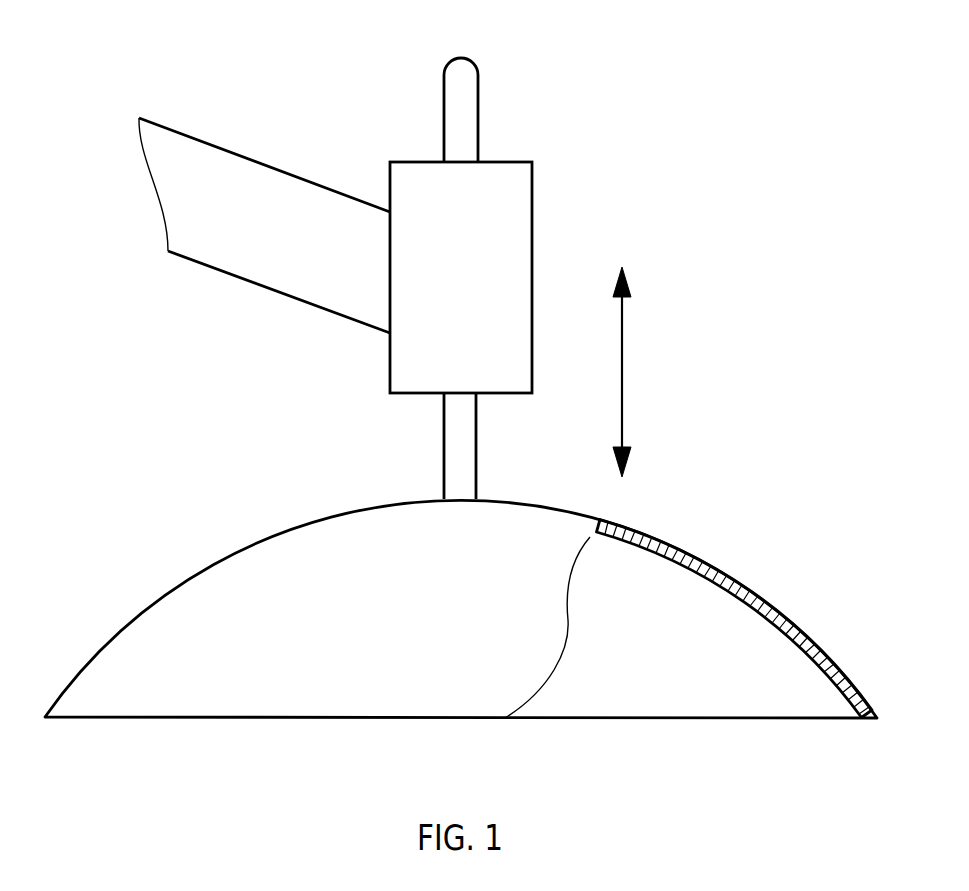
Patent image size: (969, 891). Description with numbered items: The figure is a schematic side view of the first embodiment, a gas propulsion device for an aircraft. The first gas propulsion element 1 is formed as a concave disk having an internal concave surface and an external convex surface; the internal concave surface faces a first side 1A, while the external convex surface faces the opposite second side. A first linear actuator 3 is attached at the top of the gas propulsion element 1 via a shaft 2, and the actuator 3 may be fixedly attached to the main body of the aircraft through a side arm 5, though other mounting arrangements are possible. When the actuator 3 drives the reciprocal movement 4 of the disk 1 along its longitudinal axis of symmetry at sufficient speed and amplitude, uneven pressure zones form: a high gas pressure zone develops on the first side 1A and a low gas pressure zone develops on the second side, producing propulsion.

The first gas propulsion element 1 is at (265, 587).
The first side 1A is at (657, 587).
The shaft 2 is at (458, 470).
The first linear actuator 3 is at (493, 233).
The reciprocal movement 4 is at (622, 380).
The side arm 5 is at (203, 166).